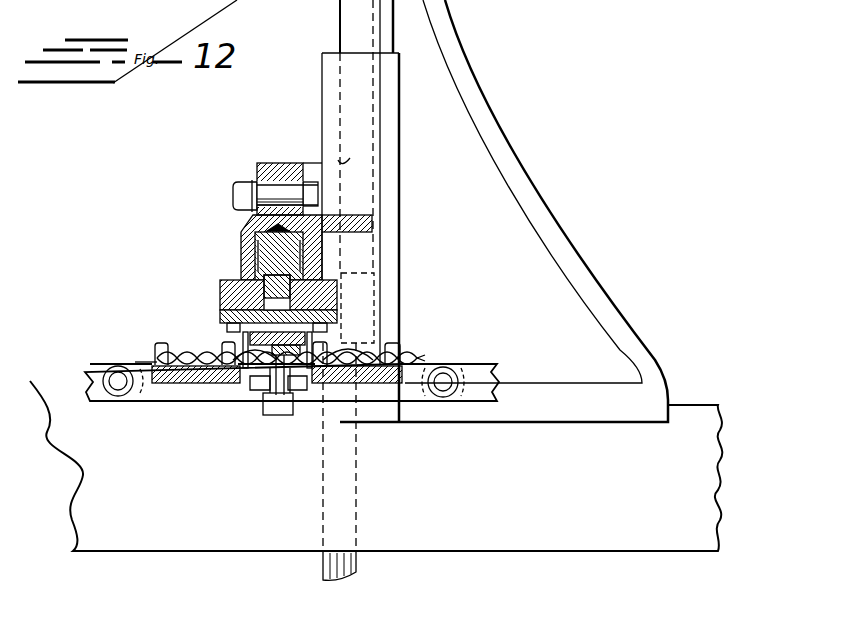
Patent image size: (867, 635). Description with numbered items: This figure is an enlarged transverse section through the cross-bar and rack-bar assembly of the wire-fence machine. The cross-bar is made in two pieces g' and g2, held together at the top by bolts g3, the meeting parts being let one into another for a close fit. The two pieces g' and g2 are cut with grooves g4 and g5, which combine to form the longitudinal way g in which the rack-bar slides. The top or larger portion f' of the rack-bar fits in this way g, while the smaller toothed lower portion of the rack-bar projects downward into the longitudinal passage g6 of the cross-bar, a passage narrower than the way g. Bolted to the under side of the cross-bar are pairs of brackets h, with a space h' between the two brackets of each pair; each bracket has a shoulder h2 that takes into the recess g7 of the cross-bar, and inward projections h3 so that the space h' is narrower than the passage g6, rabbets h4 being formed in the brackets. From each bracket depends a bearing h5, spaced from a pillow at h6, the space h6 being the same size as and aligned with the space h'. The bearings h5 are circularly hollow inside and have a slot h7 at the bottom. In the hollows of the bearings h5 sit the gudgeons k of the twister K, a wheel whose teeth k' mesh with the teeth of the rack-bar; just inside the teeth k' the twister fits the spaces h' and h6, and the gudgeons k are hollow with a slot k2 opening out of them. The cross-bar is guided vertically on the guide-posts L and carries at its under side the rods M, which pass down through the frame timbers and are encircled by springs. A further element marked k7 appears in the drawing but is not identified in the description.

The guide-posts L is at (460, 52).
The piece of cross-bar g' is at (321, 153).
The piece of cross-bar g2 is at (278, 178).
The bolts g3 is at (264, 196).
The longitudinal way g is at (252, 247).
The groove g4 is at (310, 237).
The groove g5 is at (241, 237).
The longitudinal passage g6 is at (337, 298).
The recess g7 is at (241, 292).
The top portion of rack-bar f' is at (382, 298).
The shoulder h2 is at (240, 302).
The brackets h is at (318, 320).
The rabbets h4 is at (222, 312).
The space between brackets h' is at (227, 330).
The slot h7 is at (333, 400).
The bearing h5 is at (268, 400).
The space h6 is at (285, 410).
The slot k2 is at (250, 390).
The teeth of twister k' is at (271, 448).
The twister K is at (270, 487).
The inward projections h3 is at (230, 345).
The rail bar k7 is at (250, 390).
The gudgeons k is at (252, 417).
The rods M is at (353, 461).